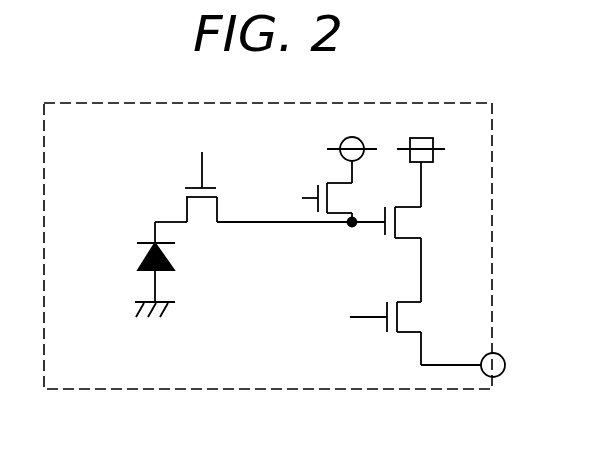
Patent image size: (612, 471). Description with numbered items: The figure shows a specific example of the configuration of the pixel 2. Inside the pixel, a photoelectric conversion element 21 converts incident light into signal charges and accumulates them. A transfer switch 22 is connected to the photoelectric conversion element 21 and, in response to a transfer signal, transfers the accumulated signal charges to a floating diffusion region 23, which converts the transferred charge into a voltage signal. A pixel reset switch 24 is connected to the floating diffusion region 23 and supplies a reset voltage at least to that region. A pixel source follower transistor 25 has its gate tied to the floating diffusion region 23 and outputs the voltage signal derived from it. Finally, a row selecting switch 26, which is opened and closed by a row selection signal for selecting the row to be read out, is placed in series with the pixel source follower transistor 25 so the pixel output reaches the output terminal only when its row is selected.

The pixel 2 is at (138, 390).
The photoelectric conversion element 21 is at (140, 259).
The transfer switch 22 is at (203, 217).
The floating diffusion region 23 is at (285, 223).
The pixel reset switch 24 is at (332, 180).
The pixel source follower transistor 25 is at (420, 222).
The row selecting switch 26 is at (417, 318).